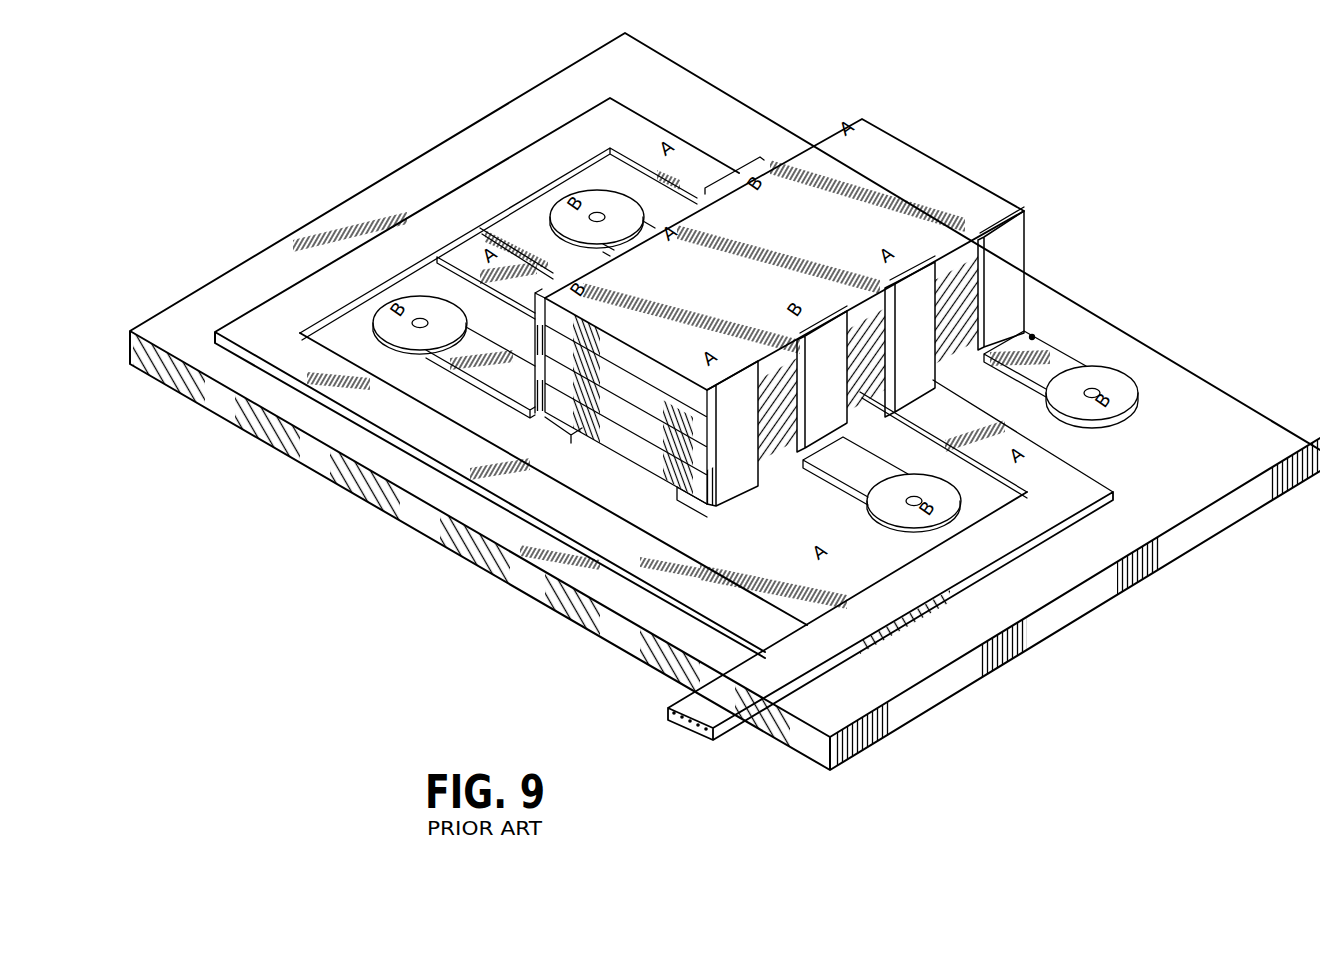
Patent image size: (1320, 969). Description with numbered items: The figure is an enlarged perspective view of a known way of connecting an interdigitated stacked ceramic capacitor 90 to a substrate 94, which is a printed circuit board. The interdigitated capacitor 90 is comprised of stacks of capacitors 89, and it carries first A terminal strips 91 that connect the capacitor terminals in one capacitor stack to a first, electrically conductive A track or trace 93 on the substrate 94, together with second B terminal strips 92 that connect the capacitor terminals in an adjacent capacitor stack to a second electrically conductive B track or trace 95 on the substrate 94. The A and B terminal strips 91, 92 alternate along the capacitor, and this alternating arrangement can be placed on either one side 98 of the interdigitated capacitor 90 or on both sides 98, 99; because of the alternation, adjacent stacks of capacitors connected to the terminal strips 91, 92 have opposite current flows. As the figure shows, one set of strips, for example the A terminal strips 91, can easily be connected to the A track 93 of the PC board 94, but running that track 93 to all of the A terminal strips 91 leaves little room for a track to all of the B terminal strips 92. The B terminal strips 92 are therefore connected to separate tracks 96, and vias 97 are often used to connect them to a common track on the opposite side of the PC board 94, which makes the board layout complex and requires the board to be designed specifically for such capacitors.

The stacks of capacitors 89 is at (630, 440).
The interdigitated stacked ceramic capacitor 90 is at (963, 96).
The A terminal strips 91 is at (838, 114).
The B terminal strips 92 is at (737, 168).
The A track 93 is at (290, 305).
The substrate 94 is at (1225, 397).
The B track 95 is at (1032, 337).
The tracks 96 is at (437, 310).
The vias 97 is at (418, 320).
The one side 98 is at (957, 270).
The other side 99 is at (788, 150).